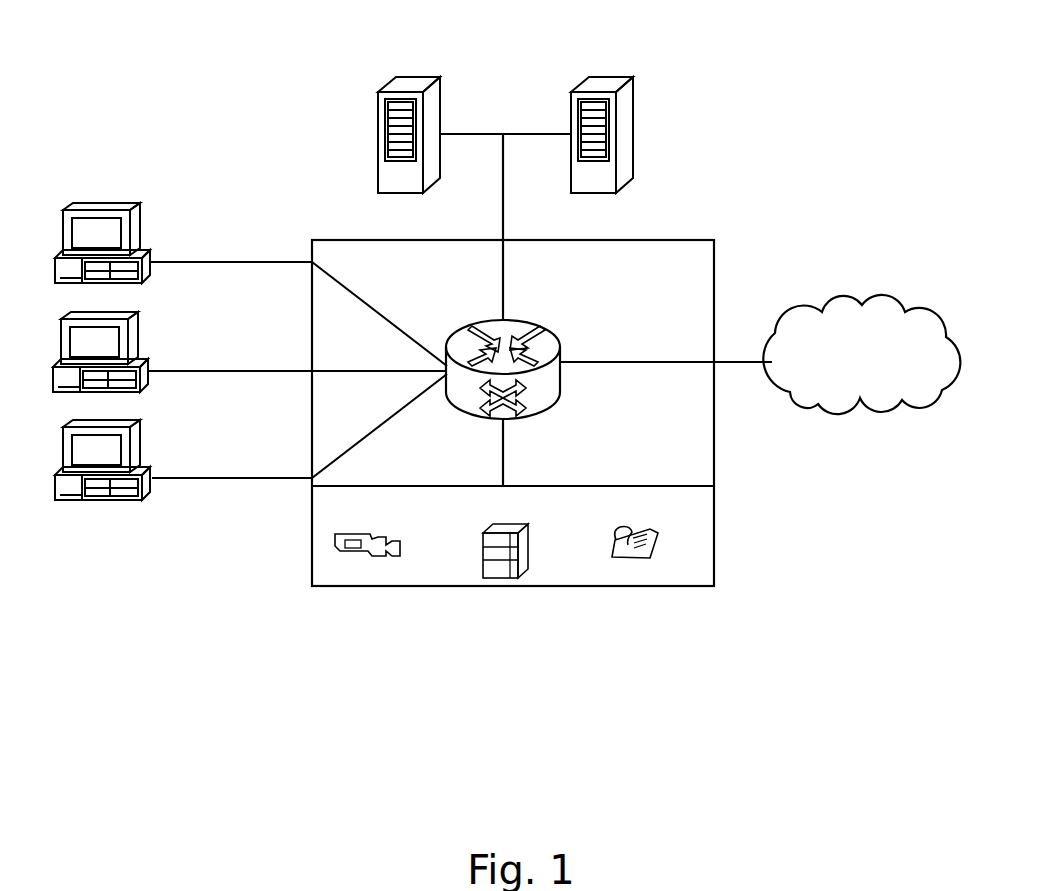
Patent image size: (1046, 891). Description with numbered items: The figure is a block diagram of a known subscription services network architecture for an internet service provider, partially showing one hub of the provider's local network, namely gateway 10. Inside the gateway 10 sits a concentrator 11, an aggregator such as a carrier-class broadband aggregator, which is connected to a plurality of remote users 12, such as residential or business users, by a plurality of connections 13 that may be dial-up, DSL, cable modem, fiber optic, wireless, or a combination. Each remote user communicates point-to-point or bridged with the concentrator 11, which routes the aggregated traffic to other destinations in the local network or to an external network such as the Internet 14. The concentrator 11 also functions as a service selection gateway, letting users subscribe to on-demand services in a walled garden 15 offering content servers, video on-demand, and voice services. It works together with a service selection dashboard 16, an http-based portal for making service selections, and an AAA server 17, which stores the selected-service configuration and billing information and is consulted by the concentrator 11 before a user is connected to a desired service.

The gateway 10 is at (690, 290).
The concentrator 11 is at (543, 334).
The remote users 12 is at (106, 188).
The connections 13 is at (231, 246).
The Internet 14 is at (843, 398).
The walled garden 15 is at (673, 557).
The service selection dashboard 16 is at (635, 134).
The authentication, authorization, and accounting server 17 is at (378, 136).